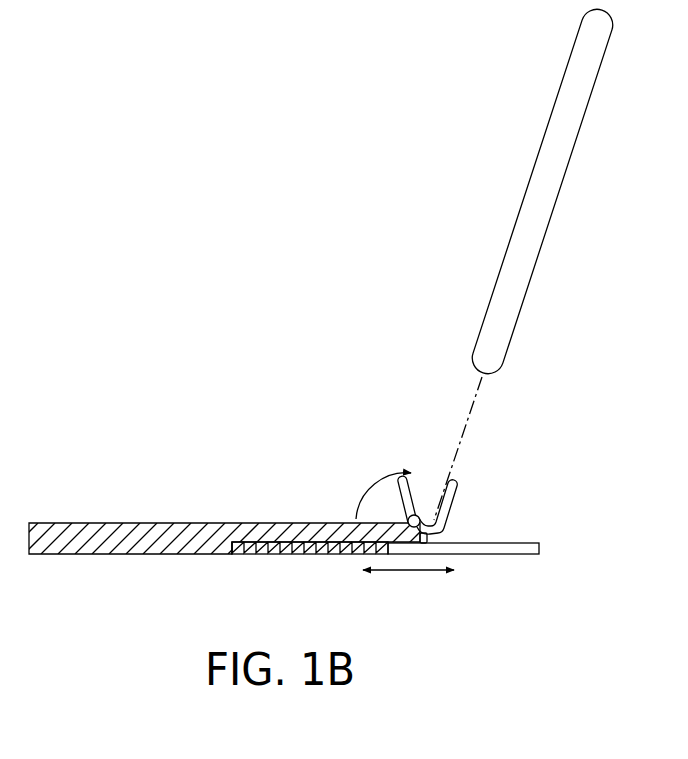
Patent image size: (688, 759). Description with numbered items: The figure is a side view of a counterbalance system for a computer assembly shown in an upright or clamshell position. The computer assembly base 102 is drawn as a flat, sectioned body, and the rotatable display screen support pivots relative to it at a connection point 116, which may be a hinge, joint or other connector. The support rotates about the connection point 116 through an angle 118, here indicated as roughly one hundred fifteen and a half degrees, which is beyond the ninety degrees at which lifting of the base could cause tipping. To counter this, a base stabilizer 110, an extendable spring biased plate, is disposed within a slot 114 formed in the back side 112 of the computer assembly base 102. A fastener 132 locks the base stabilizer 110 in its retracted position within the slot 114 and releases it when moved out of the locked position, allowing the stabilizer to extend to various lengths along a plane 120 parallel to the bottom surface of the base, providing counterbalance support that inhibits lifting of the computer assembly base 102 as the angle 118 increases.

The computer assembly base 102 is at (80, 555).
The base stabilizer 110 is at (527, 552).
The back side 112 is at (487, 489).
The slot 114 is at (280, 552).
The connection point 116 is at (437, 485).
The angle 118 is at (355, 514).
The plane 120 is at (410, 573).
The fastener 132 is at (430, 537).